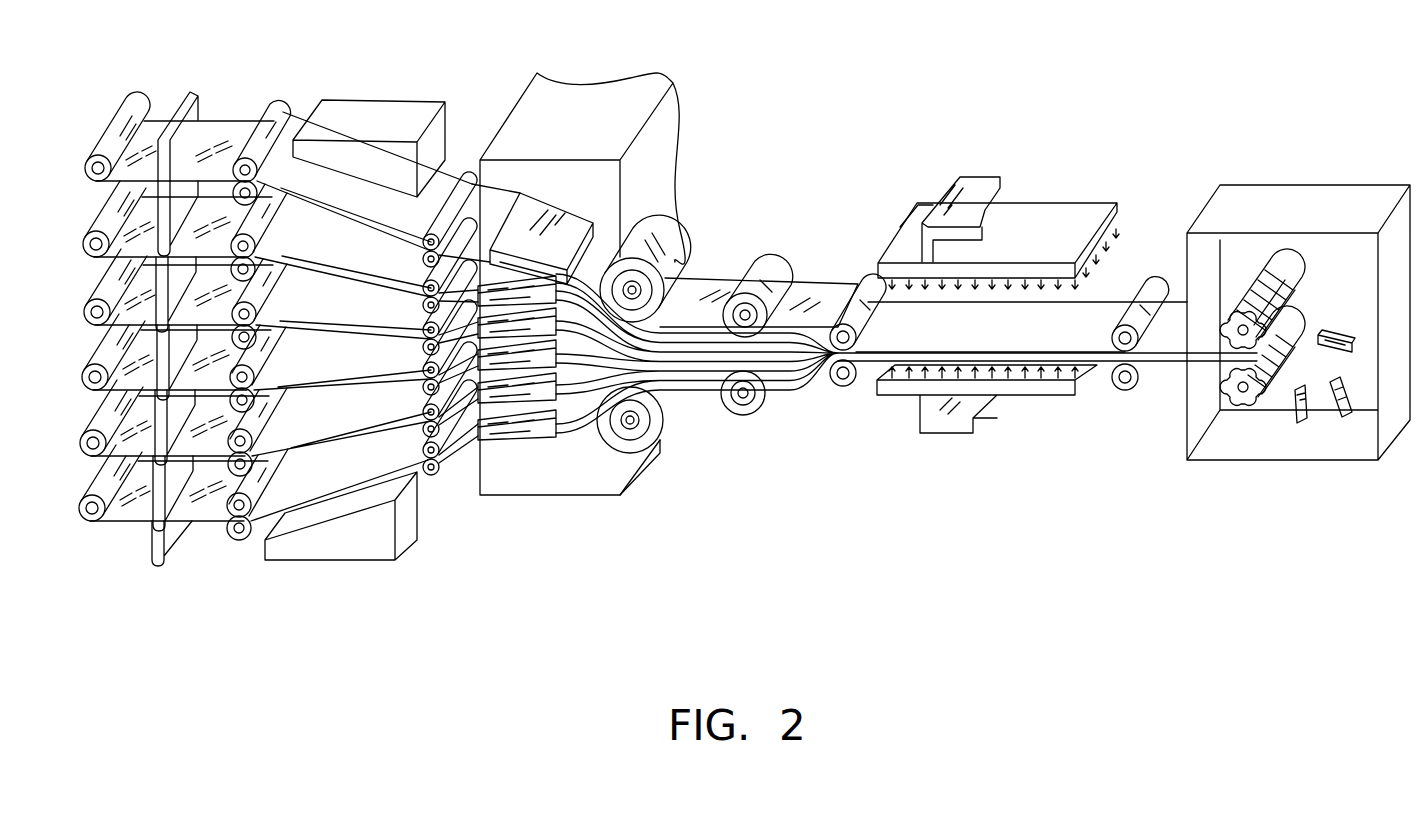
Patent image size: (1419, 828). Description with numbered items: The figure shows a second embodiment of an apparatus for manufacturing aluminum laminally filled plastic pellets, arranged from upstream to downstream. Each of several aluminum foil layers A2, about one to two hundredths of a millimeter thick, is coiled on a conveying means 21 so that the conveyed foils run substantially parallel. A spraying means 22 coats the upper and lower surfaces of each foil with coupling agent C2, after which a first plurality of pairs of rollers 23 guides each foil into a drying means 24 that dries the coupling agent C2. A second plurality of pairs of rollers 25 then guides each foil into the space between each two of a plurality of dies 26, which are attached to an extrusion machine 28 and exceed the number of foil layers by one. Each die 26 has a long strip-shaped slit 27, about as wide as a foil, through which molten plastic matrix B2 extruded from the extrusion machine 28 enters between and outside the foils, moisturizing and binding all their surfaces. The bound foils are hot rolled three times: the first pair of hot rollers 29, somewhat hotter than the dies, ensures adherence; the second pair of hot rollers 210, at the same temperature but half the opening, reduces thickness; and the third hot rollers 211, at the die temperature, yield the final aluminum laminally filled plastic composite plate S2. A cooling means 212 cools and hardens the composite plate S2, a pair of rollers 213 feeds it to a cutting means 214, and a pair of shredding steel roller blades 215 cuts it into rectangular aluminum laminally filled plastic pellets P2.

The conveying means 21 is at (90, 163).
The spraying means 22 is at (192, 92).
The first plurality of pairs of rollers 23 is at (286, 108).
The drying means 24 is at (386, 100).
The second plurality of pairs of rollers 25 is at (466, 180).
The dies 26 is at (541, 212).
The long strip-shaped slit 27 is at (600, 298).
The extrusion machine 28 is at (592, 98).
The first pair of hot rollers 29 is at (688, 236).
The second pair of hot rollers 210 is at (774, 272).
The third hot rollers 211 is at (868, 292).
The cooling means 212 is at (1056, 240).
The pair of rollers 213 is at (1156, 290).
The cutting means 214 is at (1270, 195).
The shredding steel roller blades 215 is at (1288, 288).
The aluminum foil layers A2 is at (165, 128).
The coupling agent C2 is at (200, 135).
The molten plastic matrix B2 is at (580, 432).
The aluminum laminally filled plastic composite plate S2 is at (1105, 388).
The aluminum laminally filled plastic pellets P2 is at (1337, 352).